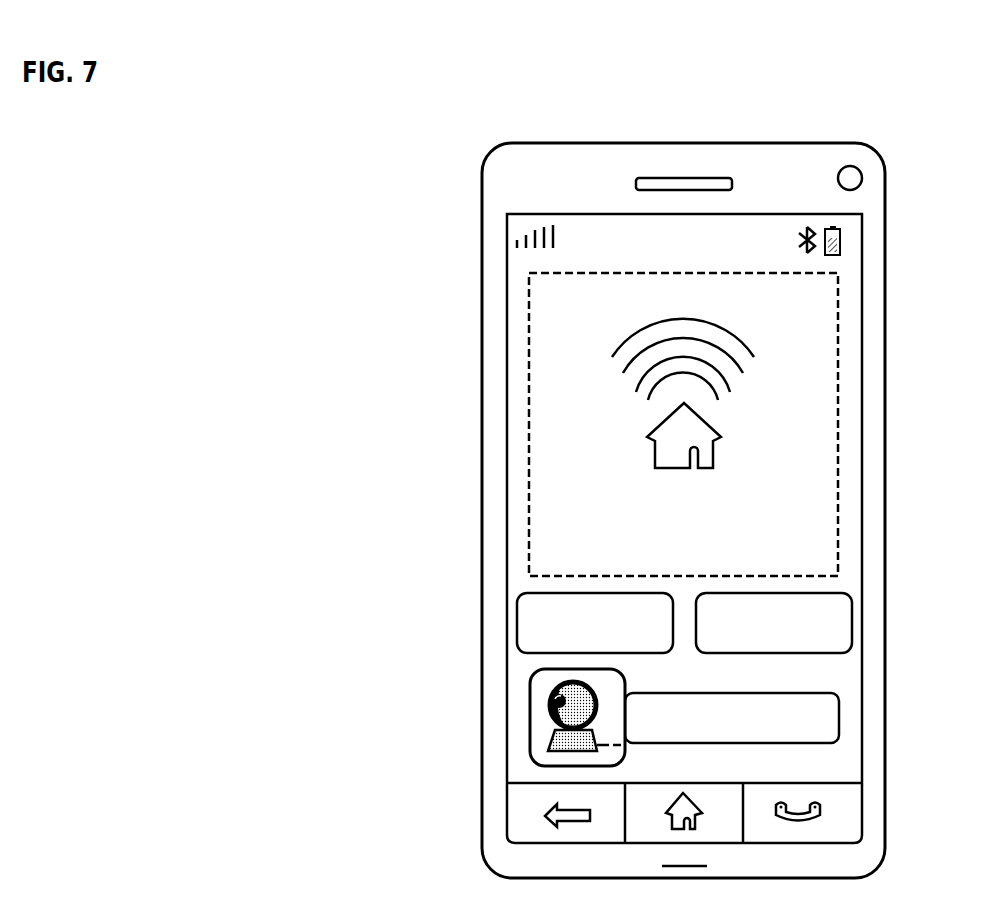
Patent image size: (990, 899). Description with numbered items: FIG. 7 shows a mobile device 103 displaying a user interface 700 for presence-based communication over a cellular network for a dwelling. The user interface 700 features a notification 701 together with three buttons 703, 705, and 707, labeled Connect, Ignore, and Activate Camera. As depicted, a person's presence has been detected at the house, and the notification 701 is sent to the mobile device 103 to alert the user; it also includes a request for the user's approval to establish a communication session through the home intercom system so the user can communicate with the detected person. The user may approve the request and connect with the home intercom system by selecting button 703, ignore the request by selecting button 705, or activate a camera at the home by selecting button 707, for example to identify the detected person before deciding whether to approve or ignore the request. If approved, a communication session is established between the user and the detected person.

The mobile device 103 is at (682, 142).
The user interface 700 is at (506, 333).
The notification 701 is at (530, 425).
The button 703 is at (518, 622).
The button 705 is at (851, 623).
The button 707 is at (530, 717).